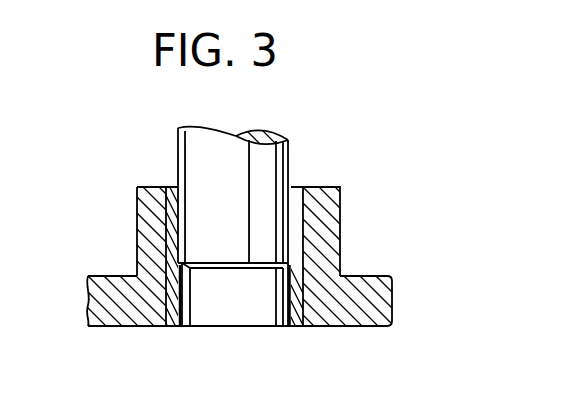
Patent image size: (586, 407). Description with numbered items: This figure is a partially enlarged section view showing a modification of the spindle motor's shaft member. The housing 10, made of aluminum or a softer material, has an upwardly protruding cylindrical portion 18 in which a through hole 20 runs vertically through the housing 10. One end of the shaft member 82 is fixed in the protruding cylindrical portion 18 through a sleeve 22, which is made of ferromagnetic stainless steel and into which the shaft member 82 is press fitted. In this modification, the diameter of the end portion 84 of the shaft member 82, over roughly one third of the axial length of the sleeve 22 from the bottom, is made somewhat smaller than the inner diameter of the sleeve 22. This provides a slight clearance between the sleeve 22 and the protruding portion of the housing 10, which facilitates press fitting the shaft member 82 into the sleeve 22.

The housing 10 is at (365, 308).
The protruding cylindrical portion 18 is at (140, 232).
The through hole 20 is at (310, 282).
The sleeve 22 is at (300, 188).
The shaft member 82 is at (263, 162).
The tube end portion 84 is at (288, 327).